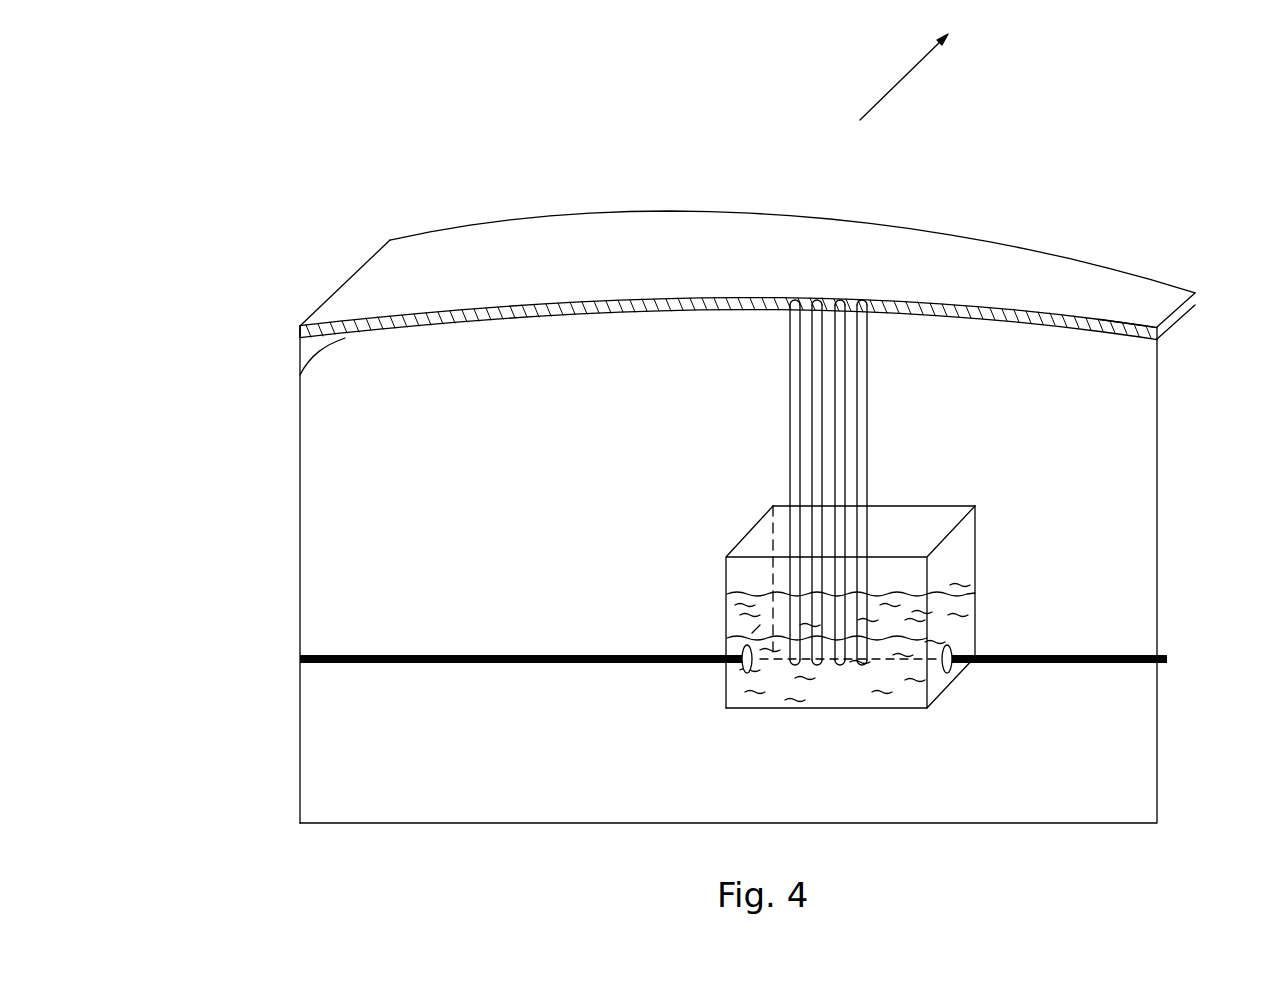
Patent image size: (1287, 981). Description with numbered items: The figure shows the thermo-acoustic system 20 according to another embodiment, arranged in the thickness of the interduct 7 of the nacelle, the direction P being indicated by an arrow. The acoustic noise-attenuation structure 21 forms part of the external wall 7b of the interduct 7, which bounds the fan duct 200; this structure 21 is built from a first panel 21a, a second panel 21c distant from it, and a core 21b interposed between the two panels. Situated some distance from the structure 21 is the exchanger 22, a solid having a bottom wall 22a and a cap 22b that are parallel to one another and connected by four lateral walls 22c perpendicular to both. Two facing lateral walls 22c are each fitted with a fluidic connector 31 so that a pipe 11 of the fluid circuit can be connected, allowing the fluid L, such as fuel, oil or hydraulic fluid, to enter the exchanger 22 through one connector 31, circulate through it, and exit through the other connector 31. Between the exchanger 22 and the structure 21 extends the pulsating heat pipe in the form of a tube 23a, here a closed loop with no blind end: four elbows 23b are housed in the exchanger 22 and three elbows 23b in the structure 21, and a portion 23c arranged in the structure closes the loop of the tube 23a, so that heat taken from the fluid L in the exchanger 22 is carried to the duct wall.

The fan duct 200 is at (1078, 166).
The direction of travel P is at (898, 80).
The thermo-acoustic system 20 is at (1125, 400).
The interduct 7 is at (325, 490).
The external wall of the interduct 7b is at (437, 308).
The acoustic noise-attenuation structure 21 is at (553, 293).
The first panel 21a is at (1040, 317).
The core 21b is at (312, 323).
The second panel 21c is at (300, 375).
The tube 23a is at (882, 388).
The elbows 23b is at (857, 303).
The portion closing the loop 23c is at (867, 303).
The exchanger 22 is at (997, 597).
The bottom wall 22a is at (752, 697).
The cap 22b is at (768, 522).
The lateral walls 22c is at (948, 498).
The fluid L is at (775, 658).
The fluidic connector 31 is at (742, 652).
The pipes 11 is at (532, 668).